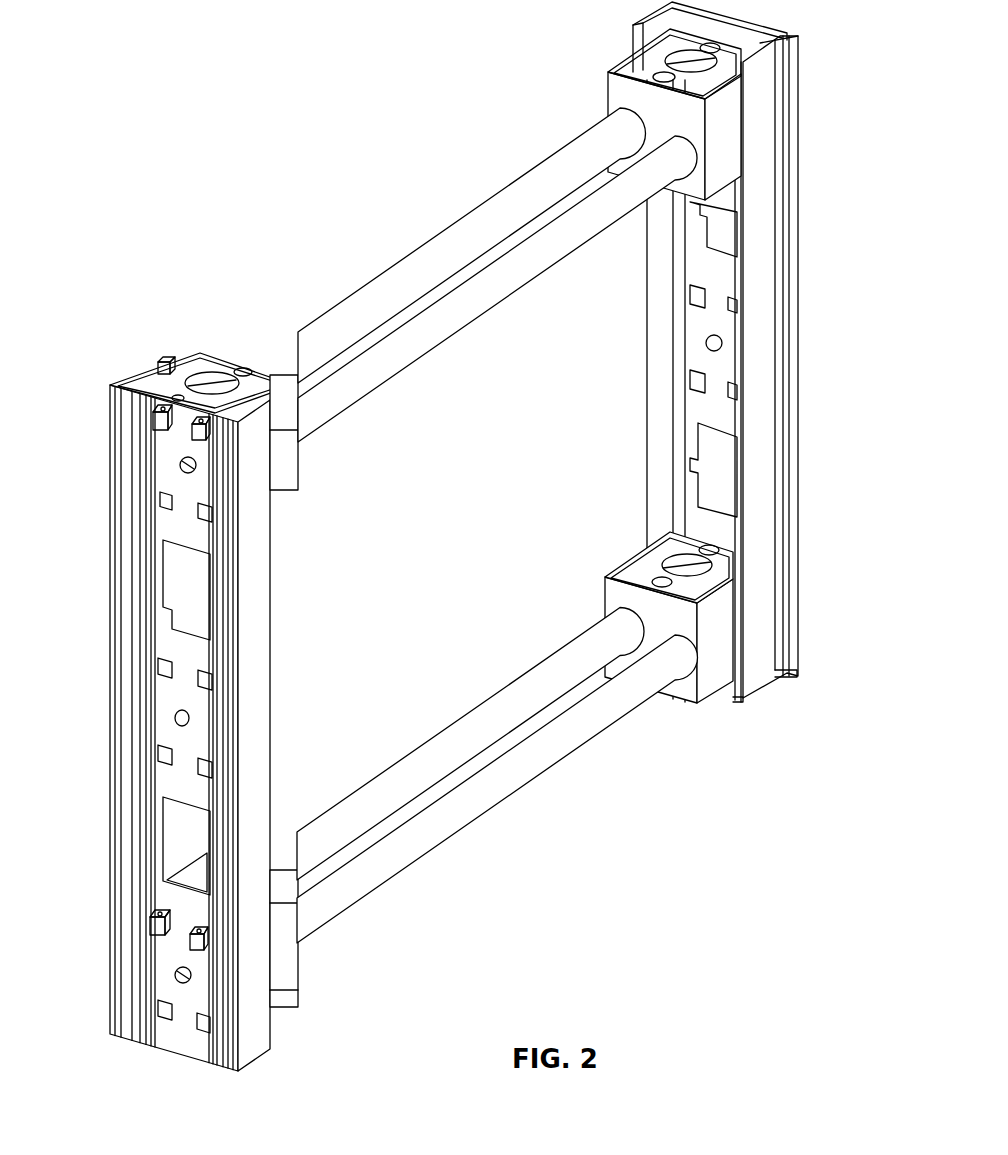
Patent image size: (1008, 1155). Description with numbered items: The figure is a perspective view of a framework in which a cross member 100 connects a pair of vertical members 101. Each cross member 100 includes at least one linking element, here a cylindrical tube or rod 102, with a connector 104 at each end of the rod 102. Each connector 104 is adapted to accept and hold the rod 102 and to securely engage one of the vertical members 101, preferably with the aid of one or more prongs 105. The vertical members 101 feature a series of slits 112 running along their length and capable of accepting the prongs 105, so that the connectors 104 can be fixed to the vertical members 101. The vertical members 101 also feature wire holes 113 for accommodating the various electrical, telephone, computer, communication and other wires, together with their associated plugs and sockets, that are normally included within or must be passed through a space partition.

The cross member 100 is at (456, 551).
The vertical member 101 is at (454, 536).
The rod 102 is at (523, 195).
The connector 104 is at (612, 80).
The prong 105 is at (197, 433).
The slit 112 is at (200, 510).
The wire hole 113 is at (722, 220).